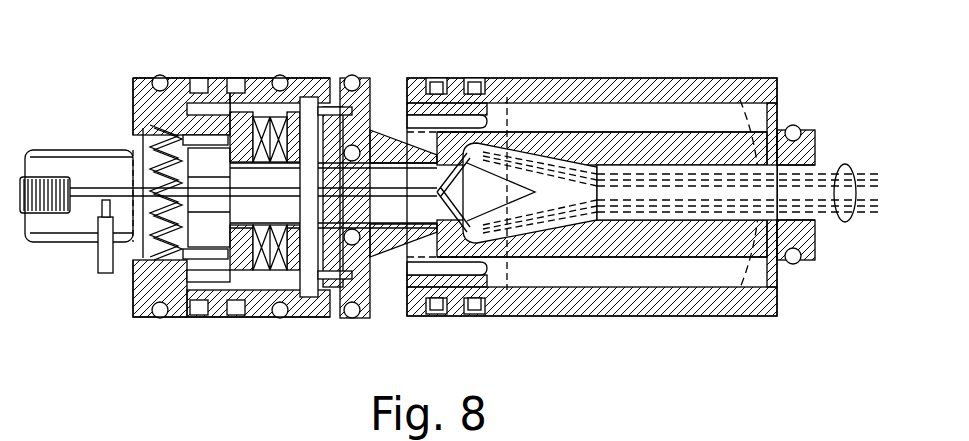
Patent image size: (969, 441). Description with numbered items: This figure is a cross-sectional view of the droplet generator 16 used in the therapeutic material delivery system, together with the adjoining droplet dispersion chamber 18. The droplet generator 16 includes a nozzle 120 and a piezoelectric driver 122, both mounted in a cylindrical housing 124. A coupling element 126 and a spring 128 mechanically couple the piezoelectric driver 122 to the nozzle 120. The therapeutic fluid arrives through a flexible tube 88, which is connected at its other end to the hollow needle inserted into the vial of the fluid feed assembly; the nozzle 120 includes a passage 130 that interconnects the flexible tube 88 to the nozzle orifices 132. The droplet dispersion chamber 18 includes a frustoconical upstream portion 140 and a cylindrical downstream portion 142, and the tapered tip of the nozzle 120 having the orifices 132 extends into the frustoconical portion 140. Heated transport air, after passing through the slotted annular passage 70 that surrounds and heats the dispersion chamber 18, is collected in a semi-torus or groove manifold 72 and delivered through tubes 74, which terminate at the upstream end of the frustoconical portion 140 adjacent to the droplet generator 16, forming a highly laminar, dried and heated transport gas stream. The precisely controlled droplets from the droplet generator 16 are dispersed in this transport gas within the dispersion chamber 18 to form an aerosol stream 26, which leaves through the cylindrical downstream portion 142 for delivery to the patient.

The droplet generator 16 is at (100, 100).
The droplet dispersion chamber 18 is at (627, 85).
The aerosol stream 26 is at (845, 222).
The slotted annular passage 70 is at (716, 112).
The groove manifold 72 is at (383, 93).
The tubes 74 is at (440, 232).
The flexible tube 88 is at (98, 264).
The nozzle 120 is at (397, 258).
The piezoelectric driver 122 is at (267, 112).
The cylindrical housing 124 is at (133, 298).
The coupling element 126 is at (240, 118).
The spring 128 is at (161, 257).
The passage 130 is at (297, 198).
The nozzle orifices 132 is at (459, 183).
The frustoconical upstream portion 140 is at (553, 222).
The cylindrical downstream portion 142 is at (706, 222).